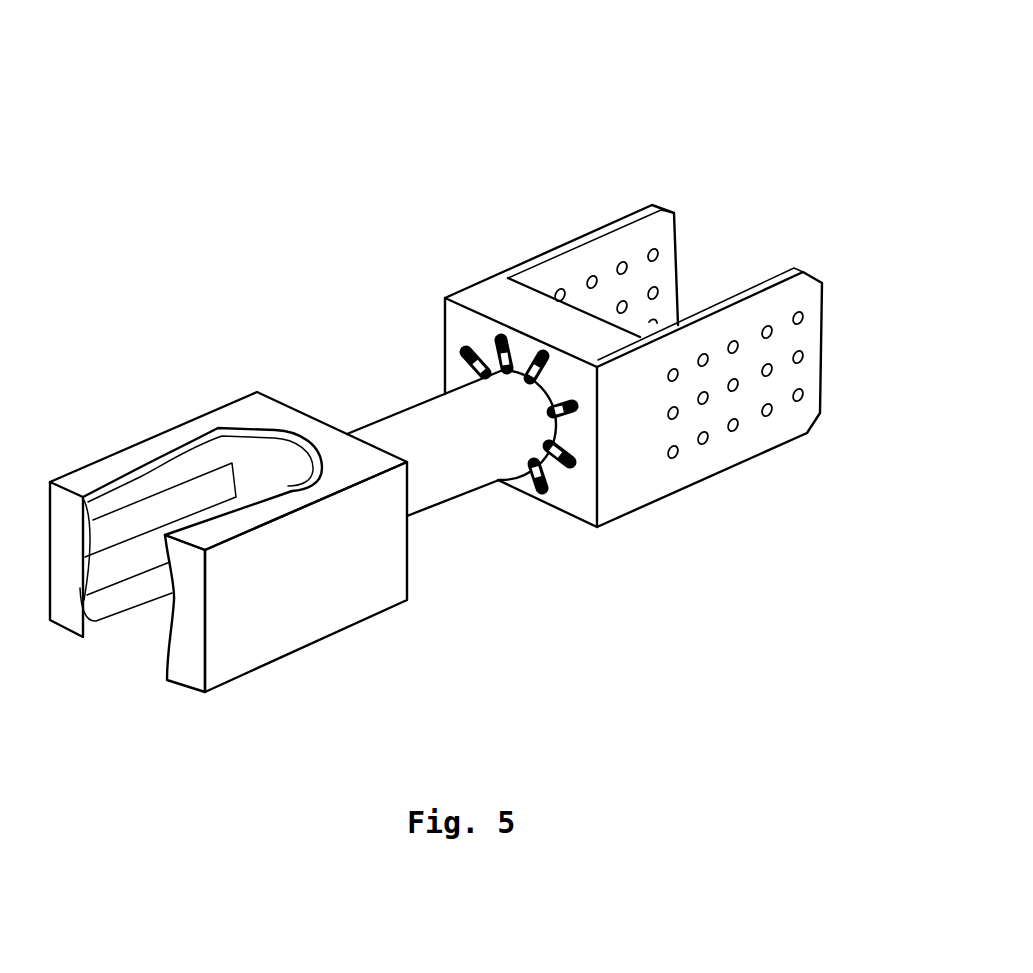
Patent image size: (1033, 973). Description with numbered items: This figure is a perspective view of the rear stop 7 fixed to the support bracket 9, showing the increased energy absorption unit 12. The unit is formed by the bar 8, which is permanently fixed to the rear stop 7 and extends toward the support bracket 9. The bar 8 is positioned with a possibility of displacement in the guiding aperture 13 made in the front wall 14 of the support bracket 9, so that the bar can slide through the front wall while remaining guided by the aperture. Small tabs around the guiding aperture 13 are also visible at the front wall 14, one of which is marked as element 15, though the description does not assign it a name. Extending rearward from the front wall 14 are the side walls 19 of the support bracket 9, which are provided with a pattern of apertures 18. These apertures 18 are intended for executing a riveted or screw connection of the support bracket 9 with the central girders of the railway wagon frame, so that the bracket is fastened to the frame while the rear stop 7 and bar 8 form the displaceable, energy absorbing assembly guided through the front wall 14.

The rear stop 7 is at (258, 404).
The bar 8 is at (455, 438).
The support bracket 9 is at (552, 218).
The increased energy absorption unit 12 is at (526, 392).
The guiding aperture 13 is at (556, 466).
The front wall 14 is at (468, 322).
The locking finger 15 is at (541, 496).
The apertures 18 is at (767, 410).
The side walls 19 is at (727, 305).